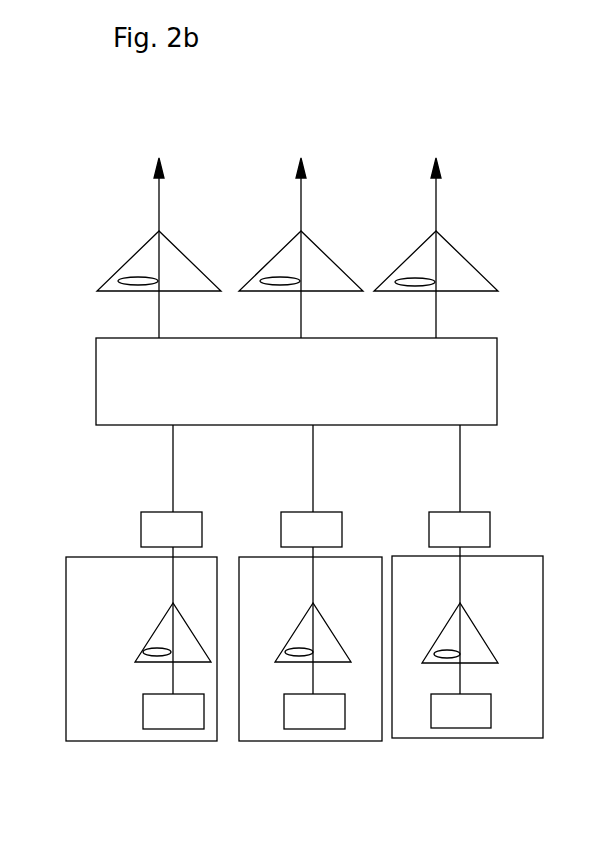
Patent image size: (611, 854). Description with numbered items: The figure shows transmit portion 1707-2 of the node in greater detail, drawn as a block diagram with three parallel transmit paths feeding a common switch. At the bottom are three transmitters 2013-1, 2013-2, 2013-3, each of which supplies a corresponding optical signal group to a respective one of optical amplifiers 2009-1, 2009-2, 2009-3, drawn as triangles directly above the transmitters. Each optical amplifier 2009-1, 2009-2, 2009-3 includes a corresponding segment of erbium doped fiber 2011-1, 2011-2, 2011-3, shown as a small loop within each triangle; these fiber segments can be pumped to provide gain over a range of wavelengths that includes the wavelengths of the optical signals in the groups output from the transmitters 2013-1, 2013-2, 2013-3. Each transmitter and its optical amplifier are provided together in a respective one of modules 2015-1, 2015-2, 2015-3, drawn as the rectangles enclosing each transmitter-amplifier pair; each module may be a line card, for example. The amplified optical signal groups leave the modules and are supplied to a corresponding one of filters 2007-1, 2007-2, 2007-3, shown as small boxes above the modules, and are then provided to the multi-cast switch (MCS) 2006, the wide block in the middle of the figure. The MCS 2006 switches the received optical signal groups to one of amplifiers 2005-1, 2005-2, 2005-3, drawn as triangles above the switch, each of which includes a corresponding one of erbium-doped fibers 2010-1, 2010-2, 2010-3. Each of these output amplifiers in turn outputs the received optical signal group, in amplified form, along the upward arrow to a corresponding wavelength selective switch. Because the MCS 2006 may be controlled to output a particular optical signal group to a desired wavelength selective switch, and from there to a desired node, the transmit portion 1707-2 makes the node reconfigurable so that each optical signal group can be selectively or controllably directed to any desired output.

The transmit portion 1707-2 is at (567, 120).
The amplifier 2005-1 is at (137, 250).
The amplifier 2005-2 is at (279, 252).
The amplifier 2005-3 is at (415, 249).
The erbium-doped fiber 2010-1 is at (137, 285).
The erbium-doped fiber 2010-2 is at (277, 287).
The erbium-doped fiber 2010-3 is at (415, 286).
The multi-cast switch (MCS) 2006 is at (96, 395).
The filter 2007-1 is at (153, 513).
The filter 2007-2 is at (293, 512).
The filter 2007-3 is at (467, 512).
The module 2015-1 is at (95, 557).
The module 2015-2 is at (282, 741).
The module 2015-3 is at (458, 738).
The optical amplifier 2009-1 is at (155, 626).
The optical amplifier 2009-2 is at (324, 620).
The optical amplifier 2009-3 is at (472, 622).
The erbium doped fiber segment 2011-1 is at (150, 650).
The erbium doped fiber segment 2011-2 is at (302, 647).
The erbium doped fiber segment 2011-3 is at (447, 650).
The transmitter 2013-1 is at (143, 710).
The transmitter 2013-2 is at (284, 710).
The transmitter 2013-3 is at (463, 694).